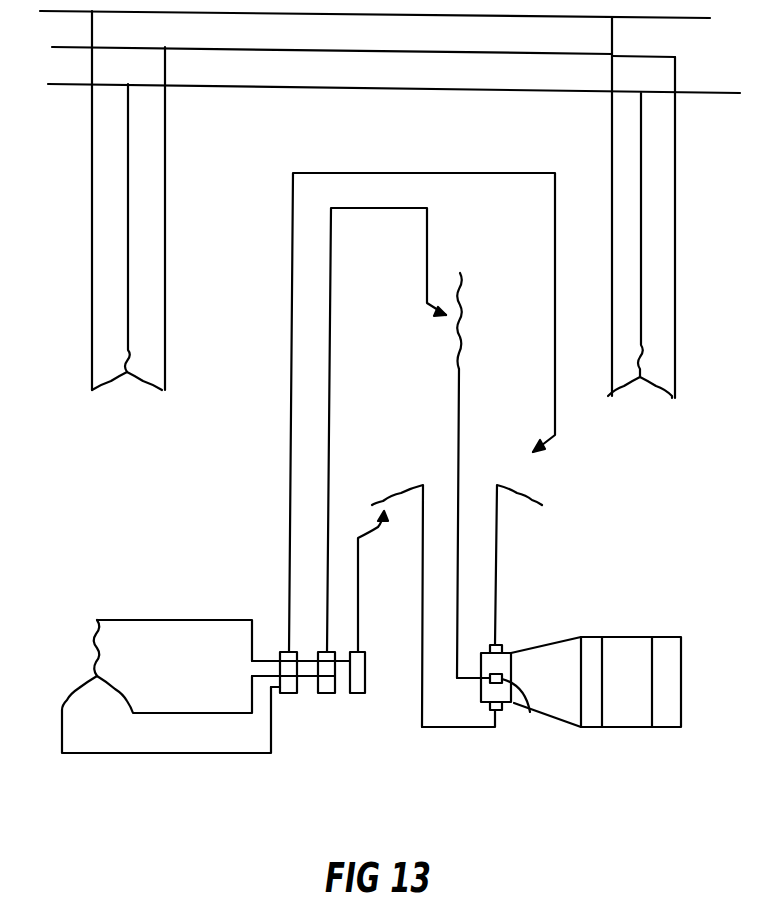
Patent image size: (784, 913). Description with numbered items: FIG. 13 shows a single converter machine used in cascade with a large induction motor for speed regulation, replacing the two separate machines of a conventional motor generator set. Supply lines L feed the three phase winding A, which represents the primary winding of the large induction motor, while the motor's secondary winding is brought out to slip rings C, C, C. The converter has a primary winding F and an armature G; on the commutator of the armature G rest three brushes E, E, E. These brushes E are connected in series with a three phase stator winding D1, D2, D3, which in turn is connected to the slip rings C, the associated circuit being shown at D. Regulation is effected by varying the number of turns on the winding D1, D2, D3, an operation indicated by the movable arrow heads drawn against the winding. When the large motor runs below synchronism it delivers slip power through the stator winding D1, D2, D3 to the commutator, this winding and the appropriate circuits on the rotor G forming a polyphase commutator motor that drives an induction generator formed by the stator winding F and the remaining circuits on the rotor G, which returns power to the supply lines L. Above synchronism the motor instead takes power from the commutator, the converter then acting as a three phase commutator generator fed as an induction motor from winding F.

The supply lines L is at (382, 48).
The three phase winding A is at (128, 200).
The primary winding of the converter F is at (641, 208).
The slip rings C is at (403, 448).
The resistance / transformer D is at (166, 686).
The three phase stator winding D1 is at (397, 599).
The three phase stator winding D2 is at (476, 475).
The three phase stator winding D3 is at (521, 559).
The brushes E is at (477, 688).
The armature G is at (596, 682).